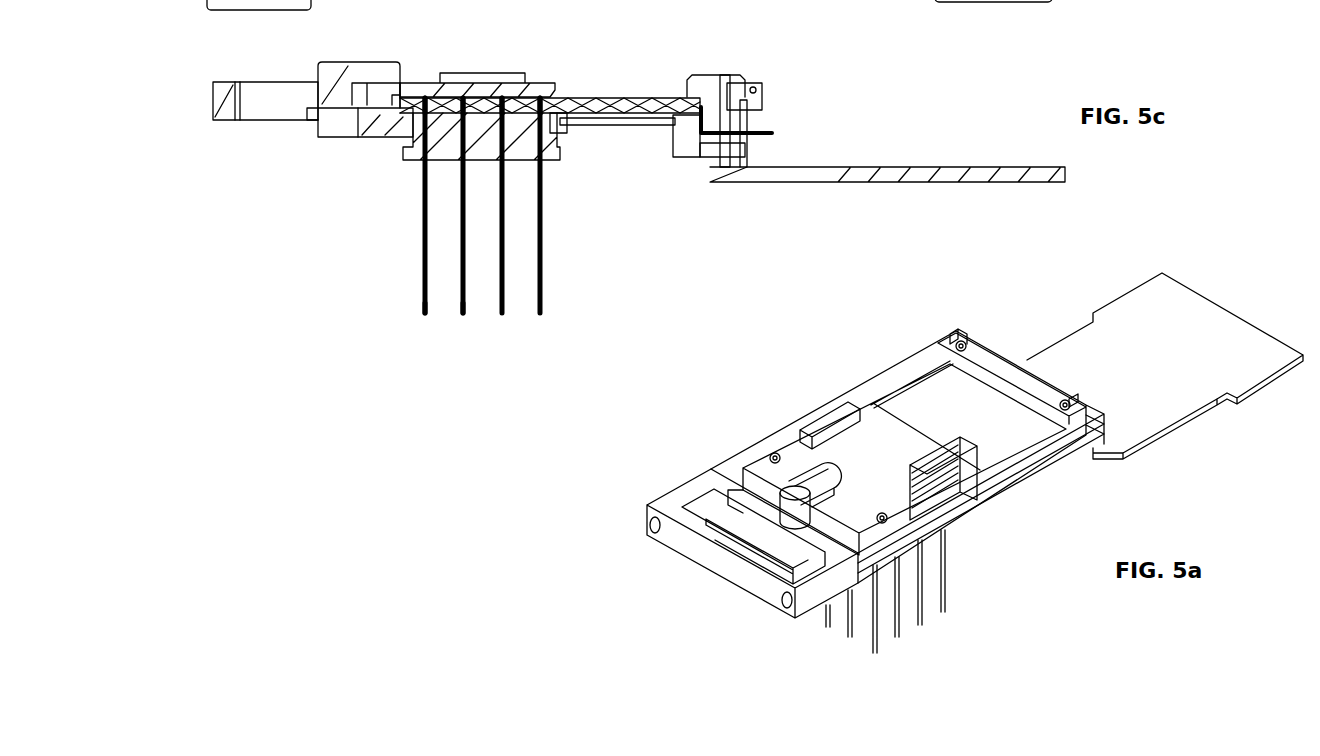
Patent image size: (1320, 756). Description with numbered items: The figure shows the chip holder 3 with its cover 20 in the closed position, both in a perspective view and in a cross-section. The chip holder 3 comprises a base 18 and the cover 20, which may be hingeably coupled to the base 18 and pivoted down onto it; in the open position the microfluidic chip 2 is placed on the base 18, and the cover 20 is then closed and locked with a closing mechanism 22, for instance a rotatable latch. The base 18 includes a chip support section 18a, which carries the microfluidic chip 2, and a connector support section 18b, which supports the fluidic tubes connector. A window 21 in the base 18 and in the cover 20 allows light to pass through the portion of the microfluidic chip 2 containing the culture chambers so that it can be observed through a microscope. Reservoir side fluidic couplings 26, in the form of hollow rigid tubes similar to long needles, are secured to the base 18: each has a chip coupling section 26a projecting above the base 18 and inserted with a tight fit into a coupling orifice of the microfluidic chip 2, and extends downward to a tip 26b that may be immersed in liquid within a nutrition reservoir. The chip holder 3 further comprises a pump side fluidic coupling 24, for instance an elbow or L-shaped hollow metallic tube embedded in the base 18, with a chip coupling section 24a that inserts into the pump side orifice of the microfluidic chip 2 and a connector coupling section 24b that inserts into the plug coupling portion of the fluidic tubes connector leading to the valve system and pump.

In FIG. 5c, the microfluidic chip 2 is at (600, 107).
In FIG. 5c, the chip holder 3 is at (335, 234).
In FIG. 5a, the chip holder 3 is at (748, 396).
In FIG. 5a, the base 18 is at (963, 530).
In FIG. 5c, the chip support section 18a is at (432, 158).
In FIG. 5c, the connector support section 18b is at (945, 178).
In FIG. 5a, the connector support section 18b is at (1183, 420).
In FIG. 5c, the cover 20 is at (421, 85).
In FIG. 5a, the cover 20 is at (917, 463).
In FIG. 5c, the window 21 is at (623, 120).
In FIG. 5a, the window 21 is at (913, 400).
In FIG. 5a, the closing mechanism 22 is at (795, 484).
In FIG. 5c, the pump side fluidic coupling 24 is at (757, 143).
In FIG. 5c, the chip coupling section 24a is at (707, 107).
In FIG. 5c, the connector coupling section 24b is at (760, 130).
In FIG. 5c, the reservoir side fluidic coupling 26 is at (556, 257).
In FIG. 5a, the reservoir side fluidic coupling 26 is at (882, 640).
In FIG. 5c, the chip coupling section 26a is at (565, 100).
In FIG. 5c, the tip 26b is at (463, 313).